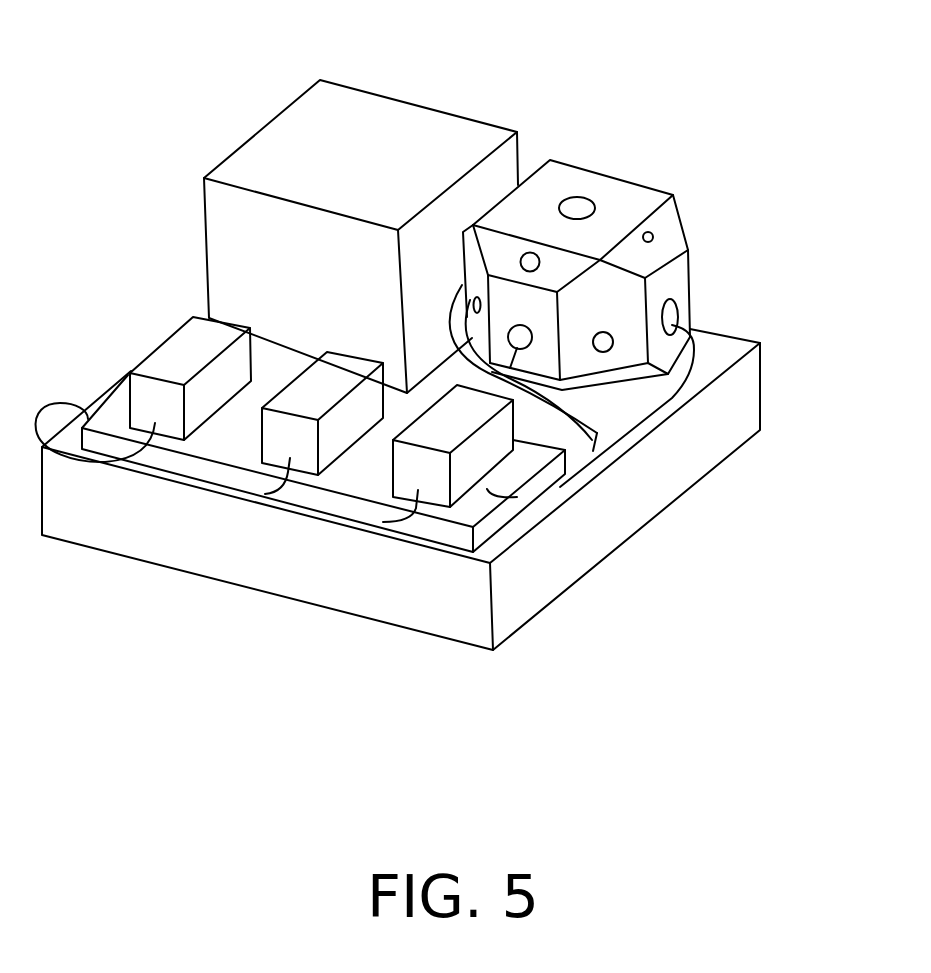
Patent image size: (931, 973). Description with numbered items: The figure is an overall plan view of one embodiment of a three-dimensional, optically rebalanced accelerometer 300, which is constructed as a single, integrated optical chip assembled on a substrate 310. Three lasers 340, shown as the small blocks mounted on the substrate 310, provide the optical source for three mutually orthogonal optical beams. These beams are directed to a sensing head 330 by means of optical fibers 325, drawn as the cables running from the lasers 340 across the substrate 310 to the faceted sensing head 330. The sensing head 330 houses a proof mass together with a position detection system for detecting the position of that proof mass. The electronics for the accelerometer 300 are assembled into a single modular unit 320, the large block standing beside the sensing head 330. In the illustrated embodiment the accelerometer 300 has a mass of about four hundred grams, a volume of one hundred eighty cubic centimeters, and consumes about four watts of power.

The three-dimensional optically rebalanced accelerometer 300 is at (201, 716).
The substrate 310 is at (305, 553).
The modular unit 320 is at (370, 122).
The optical fibers 325 is at (668, 398).
The sensing head 330 is at (607, 198).
The lasers 340 is at (430, 438).